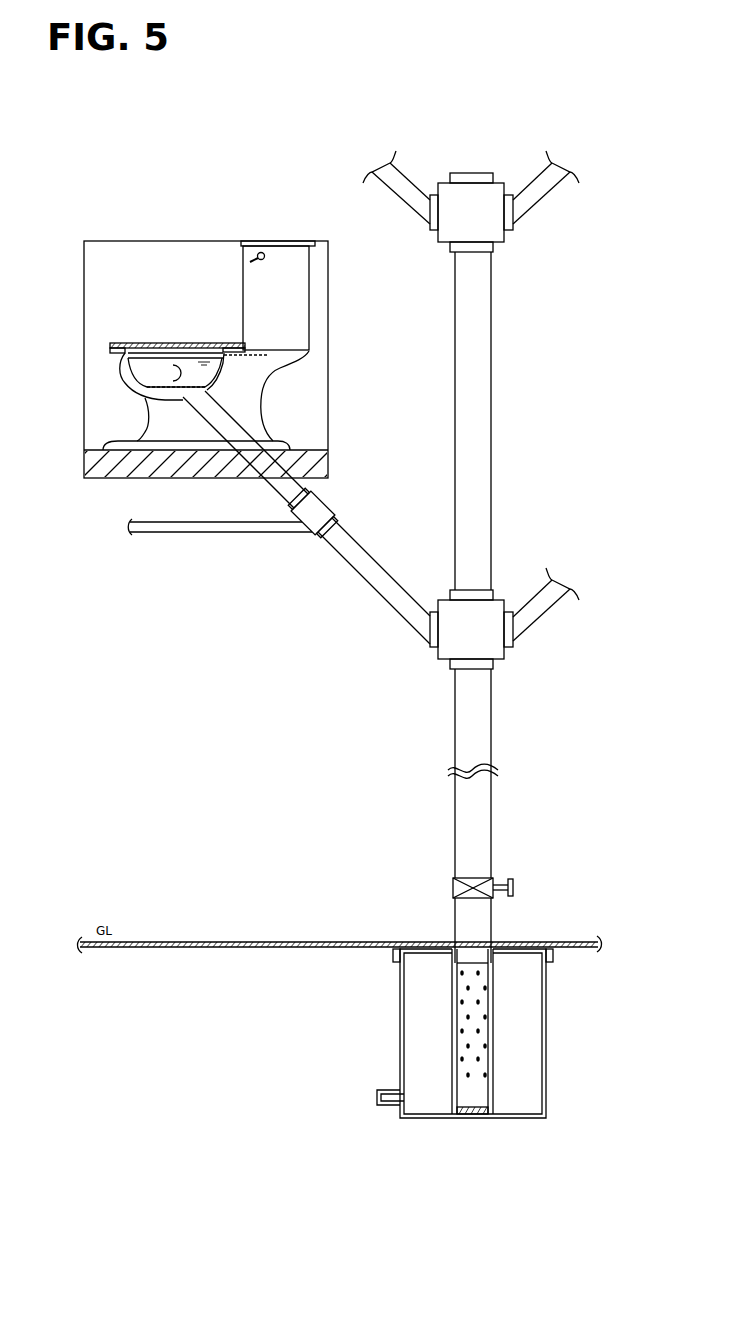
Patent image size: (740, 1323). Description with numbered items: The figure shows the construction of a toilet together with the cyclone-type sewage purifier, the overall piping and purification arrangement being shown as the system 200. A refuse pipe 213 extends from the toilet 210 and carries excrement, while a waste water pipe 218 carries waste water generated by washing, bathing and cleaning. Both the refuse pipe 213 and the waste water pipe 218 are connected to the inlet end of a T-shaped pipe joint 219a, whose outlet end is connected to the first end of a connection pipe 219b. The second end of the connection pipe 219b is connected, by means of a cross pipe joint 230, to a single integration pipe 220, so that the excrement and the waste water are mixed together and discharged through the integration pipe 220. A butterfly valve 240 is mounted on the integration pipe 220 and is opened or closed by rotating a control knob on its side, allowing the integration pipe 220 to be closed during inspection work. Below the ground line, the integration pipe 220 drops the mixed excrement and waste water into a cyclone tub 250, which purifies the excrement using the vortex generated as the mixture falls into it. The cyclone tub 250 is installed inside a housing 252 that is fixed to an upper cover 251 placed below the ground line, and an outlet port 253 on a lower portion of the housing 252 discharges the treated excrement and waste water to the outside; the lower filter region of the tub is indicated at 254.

The wastewater discharge apparatus 200 is at (557, 255).
The toilet 210 is at (164, 309).
The refuse pipe 213 is at (290, 469).
The waste water pipe 218 is at (218, 531).
The T-shaped pipe joint 219a is at (318, 512).
The connection pipe 219b is at (367, 563).
The integration pipe 220 is at (475, 372).
The cross pipe joint 230 is at (495, 648).
The butterfly valve 240 is at (475, 877).
The cyclone tub 250 is at (485, 1046).
The upper cover 251 is at (394, 952).
The housing 252 is at (546, 1048).
The outlet port 253 is at (388, 1090).
The filter tube 254 is at (482, 1095).